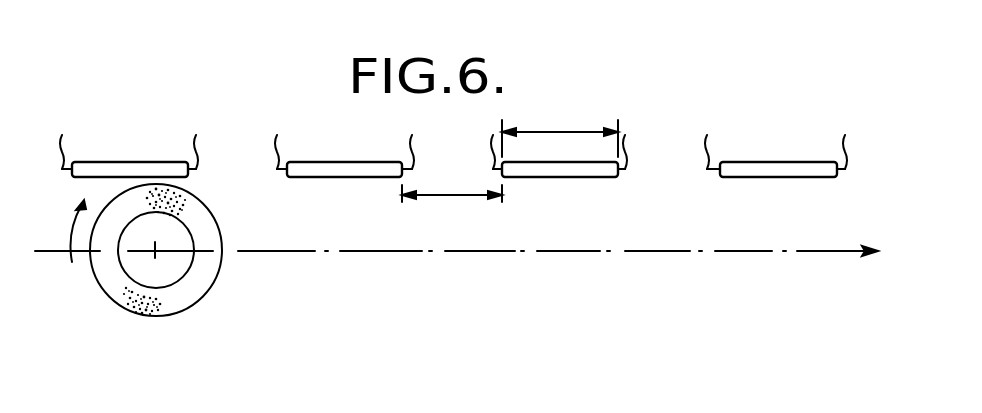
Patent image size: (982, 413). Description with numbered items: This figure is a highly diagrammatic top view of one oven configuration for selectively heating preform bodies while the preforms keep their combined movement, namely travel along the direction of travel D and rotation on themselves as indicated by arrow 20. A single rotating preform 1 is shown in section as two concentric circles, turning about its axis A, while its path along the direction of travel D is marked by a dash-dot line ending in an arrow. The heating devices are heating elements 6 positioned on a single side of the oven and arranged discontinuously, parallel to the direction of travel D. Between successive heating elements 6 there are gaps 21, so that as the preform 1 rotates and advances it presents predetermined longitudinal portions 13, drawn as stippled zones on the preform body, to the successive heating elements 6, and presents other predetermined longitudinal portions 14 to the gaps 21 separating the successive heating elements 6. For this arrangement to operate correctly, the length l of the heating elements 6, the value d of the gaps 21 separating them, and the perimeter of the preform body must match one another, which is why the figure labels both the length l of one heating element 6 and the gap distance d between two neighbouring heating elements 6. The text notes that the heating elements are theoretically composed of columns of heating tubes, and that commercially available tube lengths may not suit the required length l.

The preform 1 is at (178, 312).
The heating elements 6 is at (128, 166).
The predetermined longitudinal portions 13 is at (185, 204).
The predetermined longitudinal portions 14 is at (191, 288).
The arrow 20 is at (70, 222).
The gaps 21 is at (233, 172).
The axis of rotation A is at (152, 252).
The direction of travel D is at (806, 250).
The value of the gaps d is at (452, 206).
The length of the heating devices l is at (560, 128).